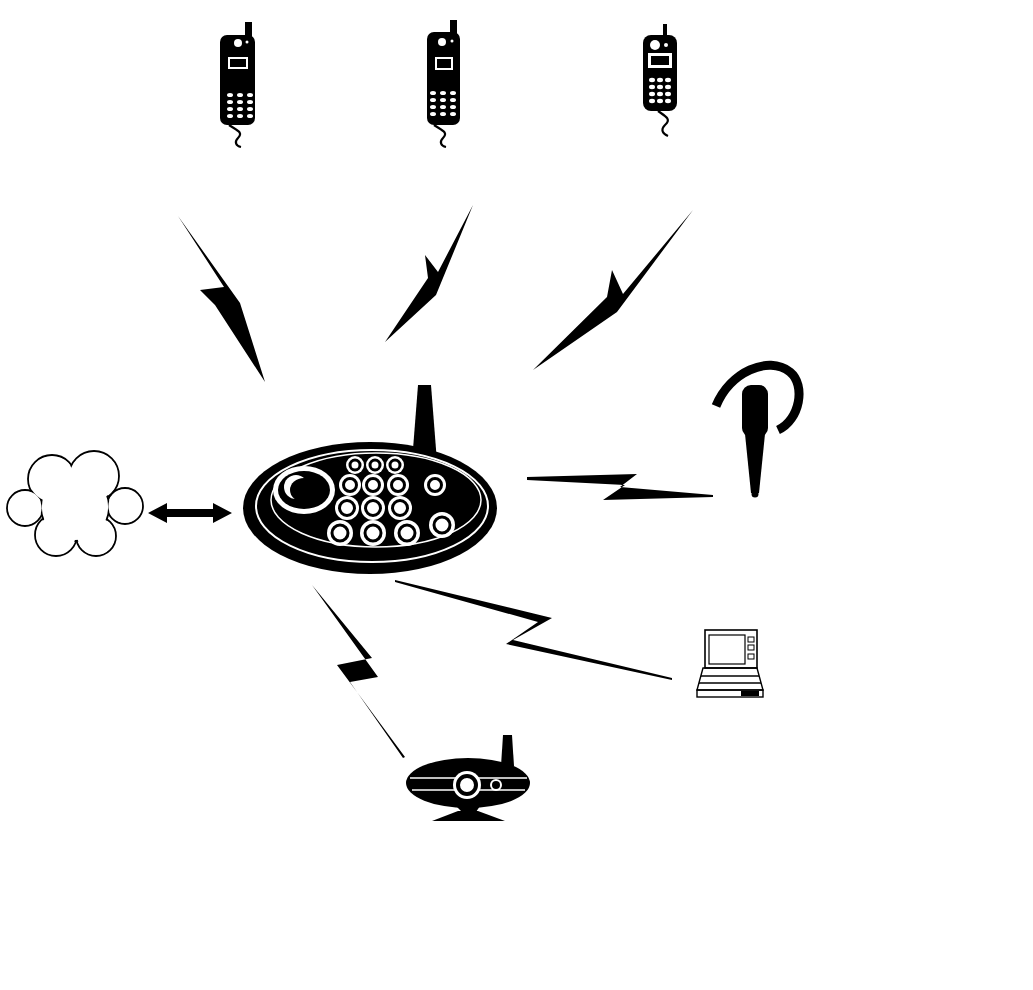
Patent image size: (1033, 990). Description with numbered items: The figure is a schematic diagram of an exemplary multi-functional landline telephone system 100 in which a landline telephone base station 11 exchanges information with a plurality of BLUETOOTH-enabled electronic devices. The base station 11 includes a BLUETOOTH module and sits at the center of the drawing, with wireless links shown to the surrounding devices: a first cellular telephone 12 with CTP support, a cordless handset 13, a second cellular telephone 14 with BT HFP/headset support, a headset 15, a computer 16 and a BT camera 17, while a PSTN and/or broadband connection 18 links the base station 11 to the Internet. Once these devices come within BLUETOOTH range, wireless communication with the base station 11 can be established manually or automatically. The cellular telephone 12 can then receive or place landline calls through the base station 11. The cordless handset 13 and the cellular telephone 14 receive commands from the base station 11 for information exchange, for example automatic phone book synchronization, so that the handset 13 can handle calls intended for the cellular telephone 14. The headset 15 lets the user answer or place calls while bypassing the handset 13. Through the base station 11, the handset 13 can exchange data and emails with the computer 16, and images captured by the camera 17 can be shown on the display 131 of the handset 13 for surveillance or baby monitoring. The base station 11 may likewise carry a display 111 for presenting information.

The multi-functional landline telephone system 100 is at (98, 74).
The base station 11 is at (498, 508).
The base station speaker 111 is at (266, 458).
The first cellular telephone 12 is at (192, 112).
The cordless handset 13 is at (442, 109).
The display 131 is at (460, 56).
The second cellular telephone 14 is at (663, 114).
The headset 15 is at (794, 450).
The computer 16 is at (733, 697).
The BT camera 17 is at (525, 790).
The PSTN and/or broadband connection 18 is at (119, 542).